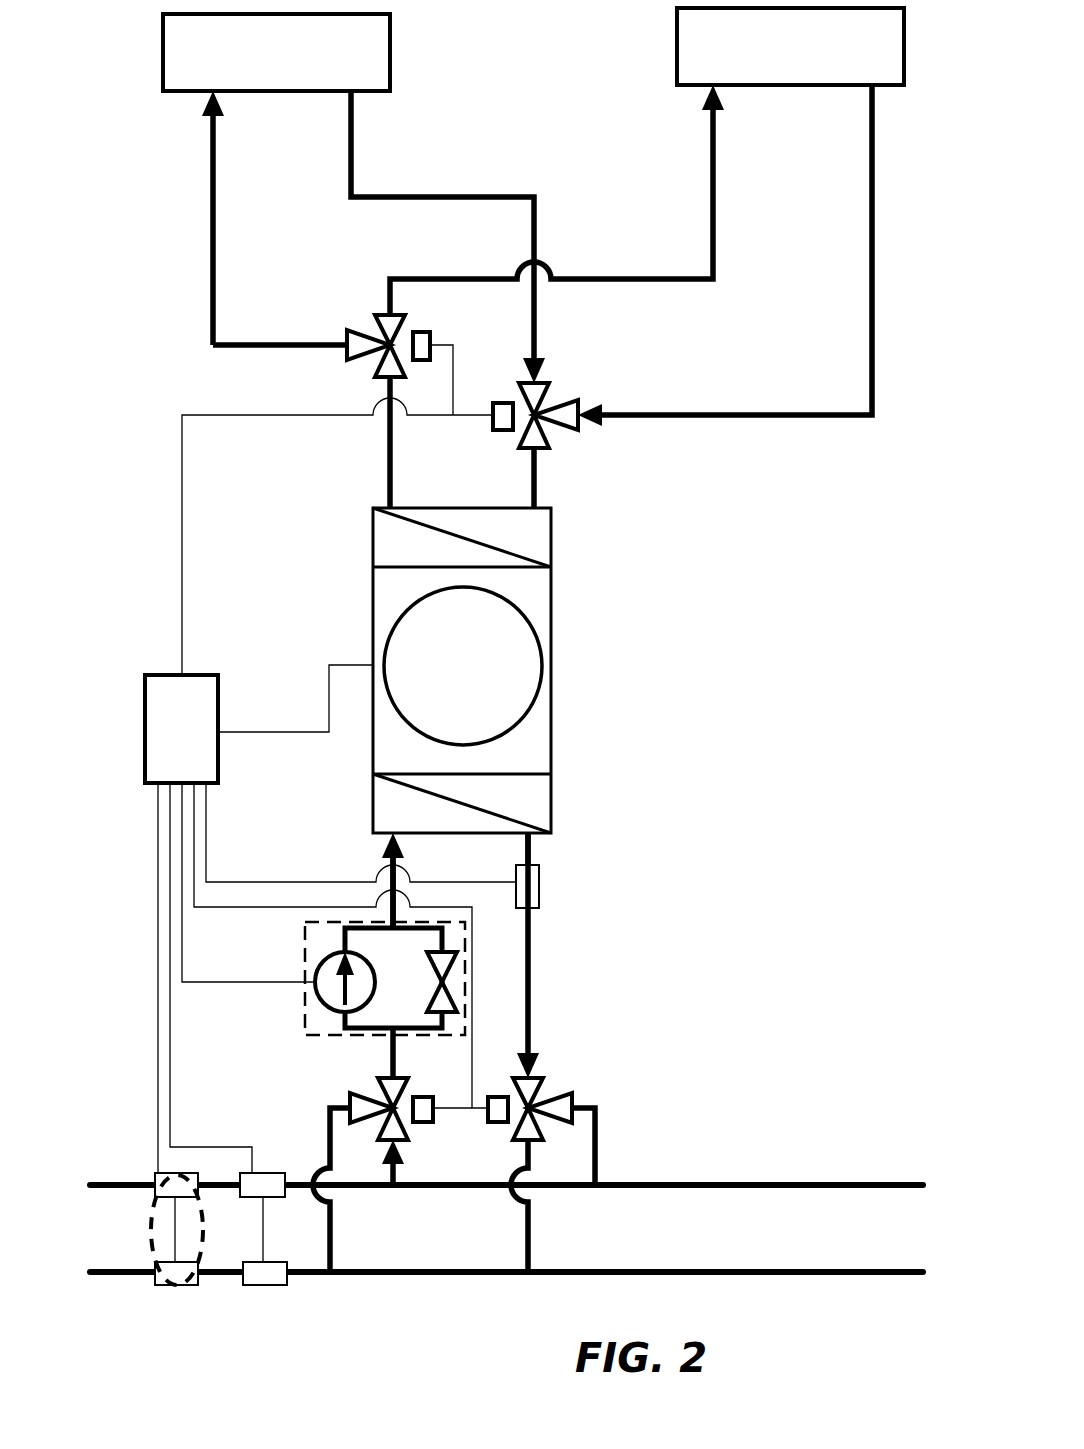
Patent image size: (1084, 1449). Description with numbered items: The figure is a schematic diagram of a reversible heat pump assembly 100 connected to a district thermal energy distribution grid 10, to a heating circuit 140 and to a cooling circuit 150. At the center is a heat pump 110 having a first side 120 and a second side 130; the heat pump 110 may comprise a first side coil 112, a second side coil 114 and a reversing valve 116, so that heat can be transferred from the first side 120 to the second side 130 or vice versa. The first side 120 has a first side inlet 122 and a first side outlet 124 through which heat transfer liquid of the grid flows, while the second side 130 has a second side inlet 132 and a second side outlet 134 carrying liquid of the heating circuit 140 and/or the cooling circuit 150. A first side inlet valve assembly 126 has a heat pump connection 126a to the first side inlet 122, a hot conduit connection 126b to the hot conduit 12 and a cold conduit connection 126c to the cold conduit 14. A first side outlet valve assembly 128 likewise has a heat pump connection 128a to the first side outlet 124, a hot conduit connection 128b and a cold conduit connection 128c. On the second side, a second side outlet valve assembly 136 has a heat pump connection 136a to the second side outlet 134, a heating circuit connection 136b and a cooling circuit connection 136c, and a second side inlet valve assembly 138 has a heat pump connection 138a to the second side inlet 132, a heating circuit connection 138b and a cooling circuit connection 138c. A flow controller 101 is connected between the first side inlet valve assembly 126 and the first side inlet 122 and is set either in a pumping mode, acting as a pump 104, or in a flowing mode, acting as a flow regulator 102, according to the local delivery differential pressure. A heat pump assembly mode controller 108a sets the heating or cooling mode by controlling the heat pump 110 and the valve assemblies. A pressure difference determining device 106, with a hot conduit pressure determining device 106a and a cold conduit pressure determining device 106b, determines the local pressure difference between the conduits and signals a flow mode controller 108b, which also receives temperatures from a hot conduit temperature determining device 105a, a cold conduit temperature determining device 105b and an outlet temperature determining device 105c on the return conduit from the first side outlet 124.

The distribution grid 10 is at (511, 1227).
The hot conduit 12 is at (762, 1187).
The cold conduit 14 is at (820, 1274).
The reversible heat pump assembly 100 is at (765, 503).
The flow controller 101 is at (339, 978).
The flow regulator 102 is at (434, 968).
The pump 104 is at (318, 992).
The hot conduit temperature determining device 105a is at (258, 1173).
The cold conduit temperature determining device 105b is at (262, 1286).
The outlet temperature determining device 105c is at (540, 890).
The pressure difference determining device 106 is at (137, 1247).
The hot conduit pressure determining device 106a is at (158, 1182).
The cold conduit pressure determining device 106b is at (160, 1286).
The heat pump assembly mode controller 108a is at (157, 688).
The flow mode controller 108b is at (150, 772).
The heat pump 110 is at (535, 670).
The first side coil 112 is at (530, 788).
The second side coil 114 is at (541, 548).
The reversing valve 116 is at (541, 668).
The first side 120 is at (531, 793).
The first side inlet 122 is at (390, 850).
The first side outlet 124 is at (532, 842).
The first side inlet valve assembly 126 is at (373, 1139).
The heat pump connection 126a is at (388, 1088).
The hot conduit connection 126b is at (410, 1132).
The cold conduit connection 126c is at (352, 1100).
The first side outlet valve assembly 128 is at (590, 1119).
The heat pump connection 128a is at (530, 1076).
The hot conduit connection 128b is at (565, 1105).
The cold conduit connection 128c is at (540, 1142).
The second side 130 is at (535, 551).
The second side inlet 132 is at (540, 473).
The second side outlet 134 is at (386, 485).
The second side outlet valve assembly 136 is at (369, 314).
The heat pump connection 136a is at (380, 378).
The heating circuit connection 136b is at (348, 338).
The cooling circuit connection 136c is at (380, 312).
The second side inlet valve assembly 138 is at (605, 393).
The heat pump connection 138a is at (548, 447).
The heating circuit connection 138b is at (537, 380).
The cooling circuit connection 138c is at (585, 410).
The heating circuit 140 is at (383, 50).
The cooling circuit 150 is at (690, 58).